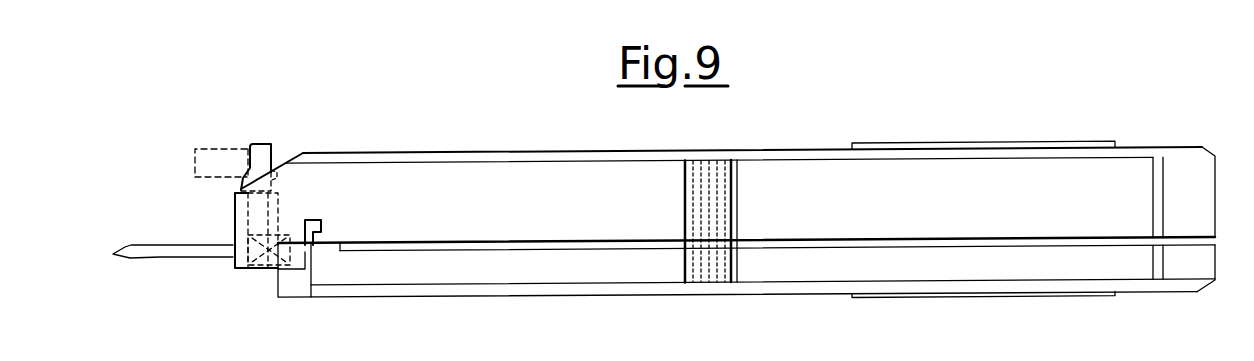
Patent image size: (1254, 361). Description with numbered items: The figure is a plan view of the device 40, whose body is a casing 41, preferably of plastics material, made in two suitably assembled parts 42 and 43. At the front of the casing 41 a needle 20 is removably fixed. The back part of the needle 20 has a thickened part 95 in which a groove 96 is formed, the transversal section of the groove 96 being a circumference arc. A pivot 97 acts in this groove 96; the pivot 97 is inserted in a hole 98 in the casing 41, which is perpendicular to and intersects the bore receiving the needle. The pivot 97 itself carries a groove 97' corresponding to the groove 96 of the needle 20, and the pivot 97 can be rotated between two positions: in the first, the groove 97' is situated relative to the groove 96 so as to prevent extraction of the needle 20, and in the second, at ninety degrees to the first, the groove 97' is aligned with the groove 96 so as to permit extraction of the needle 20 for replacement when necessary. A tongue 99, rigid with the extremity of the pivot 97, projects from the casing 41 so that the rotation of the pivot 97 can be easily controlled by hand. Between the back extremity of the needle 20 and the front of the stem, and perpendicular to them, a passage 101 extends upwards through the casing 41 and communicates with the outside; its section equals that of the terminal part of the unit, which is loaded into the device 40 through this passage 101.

The needle 20 is at (130, 245).
The device 40 is at (900, 133).
The casing 41 is at (770, 151).
The casing part 42 is at (1130, 264).
The casing part 43 is at (1130, 173).
The thickened part 95 is at (278, 232).
The groove 96 is at (246, 232).
The pivot 97 is at (294, 148).
The groove 97' is at (252, 286).
The hole 98 is at (246, 207).
The tongue 99 is at (257, 145).
The passage 101 is at (314, 220).